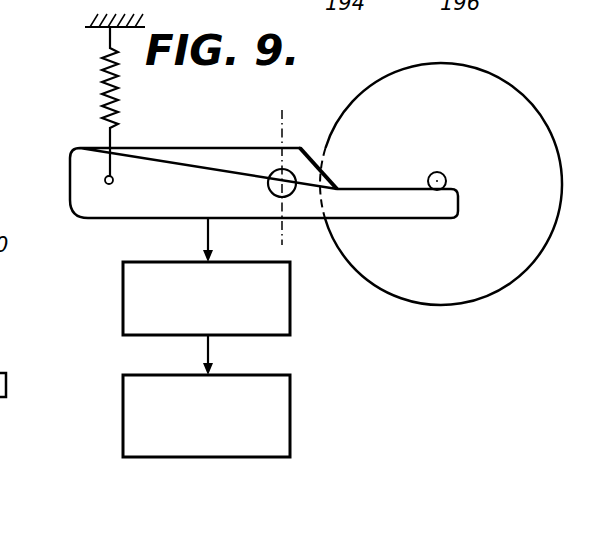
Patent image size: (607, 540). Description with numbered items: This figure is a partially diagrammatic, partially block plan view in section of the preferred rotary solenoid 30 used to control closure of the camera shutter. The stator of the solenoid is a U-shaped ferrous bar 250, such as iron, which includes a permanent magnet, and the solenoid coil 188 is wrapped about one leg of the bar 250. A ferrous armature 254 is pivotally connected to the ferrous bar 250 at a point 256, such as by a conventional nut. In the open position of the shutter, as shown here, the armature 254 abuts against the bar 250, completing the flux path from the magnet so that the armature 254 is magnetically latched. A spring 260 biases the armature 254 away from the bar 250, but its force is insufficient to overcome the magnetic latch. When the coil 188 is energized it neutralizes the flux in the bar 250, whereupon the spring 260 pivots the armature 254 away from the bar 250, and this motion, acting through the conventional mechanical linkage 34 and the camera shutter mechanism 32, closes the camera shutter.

The spring 260 is at (108, 80).
The ferrous armature 254 is at (128, 211).
The pivot point 256 is at (280, 180).
The U-shaped ferrous bar 250 is at (300, 148).
The rotary solenoid 30 is at (463, 184).
The solenoid coil 188 is at (557, 213).
The mechanical linkage 34 is at (284, 312).
The camera shutter mechanism 32 is at (285, 400).